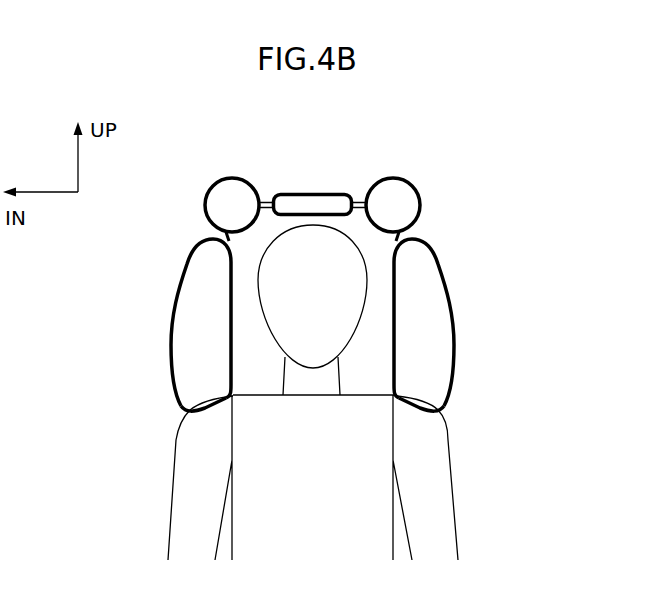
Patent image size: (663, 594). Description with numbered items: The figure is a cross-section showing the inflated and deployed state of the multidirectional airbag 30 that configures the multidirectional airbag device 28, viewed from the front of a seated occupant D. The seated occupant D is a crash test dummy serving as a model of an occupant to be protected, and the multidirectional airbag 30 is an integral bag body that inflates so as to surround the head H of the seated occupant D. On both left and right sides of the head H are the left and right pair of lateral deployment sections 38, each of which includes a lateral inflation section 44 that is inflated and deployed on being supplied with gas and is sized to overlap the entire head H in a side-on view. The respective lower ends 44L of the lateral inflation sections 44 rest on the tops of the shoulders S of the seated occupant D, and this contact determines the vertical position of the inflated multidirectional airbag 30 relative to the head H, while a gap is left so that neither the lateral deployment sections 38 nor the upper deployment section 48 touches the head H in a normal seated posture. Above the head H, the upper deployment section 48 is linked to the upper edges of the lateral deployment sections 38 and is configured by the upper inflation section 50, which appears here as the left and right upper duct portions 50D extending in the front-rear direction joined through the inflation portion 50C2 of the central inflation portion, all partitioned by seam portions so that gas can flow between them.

The upper deployment section 48 is at (433, 186).
The upper inflation section 50 is at (308, 166).
The upper duct portions 50D is at (228, 190).
The inflation portion 50C2 is at (294, 193).
The multidirectional airbag 30 is at (488, 222).
The multidirectional airbag device 28 is at (310, 344).
The lateral deployment sections 38 is at (146, 293).
The lateral inflation sections 44 is at (190, 350).
The lower ends 44L is at (200, 402).
The head H is at (343, 249).
The shoulders S is at (203, 422).
The seated occupant D is at (457, 486).